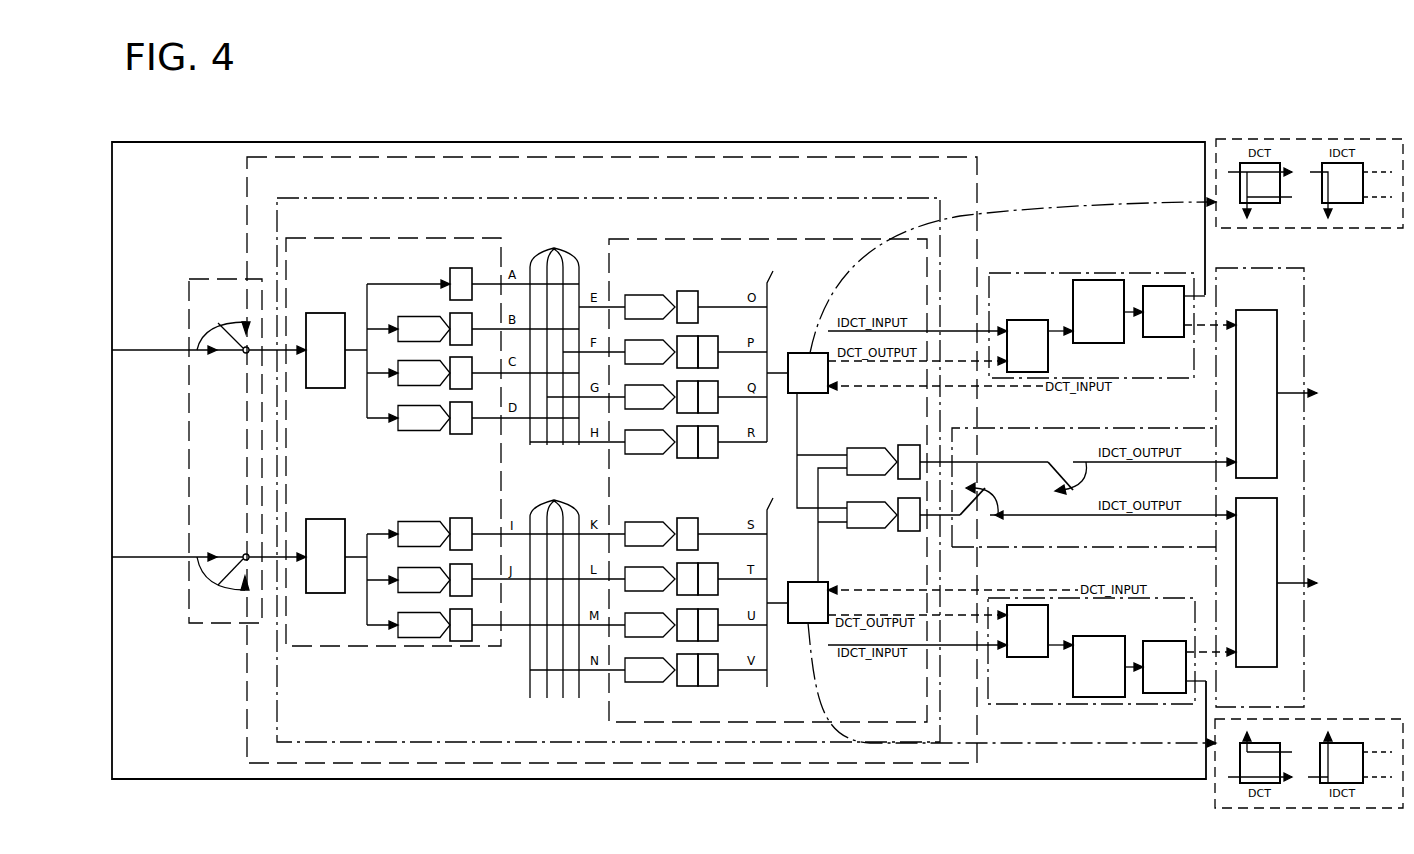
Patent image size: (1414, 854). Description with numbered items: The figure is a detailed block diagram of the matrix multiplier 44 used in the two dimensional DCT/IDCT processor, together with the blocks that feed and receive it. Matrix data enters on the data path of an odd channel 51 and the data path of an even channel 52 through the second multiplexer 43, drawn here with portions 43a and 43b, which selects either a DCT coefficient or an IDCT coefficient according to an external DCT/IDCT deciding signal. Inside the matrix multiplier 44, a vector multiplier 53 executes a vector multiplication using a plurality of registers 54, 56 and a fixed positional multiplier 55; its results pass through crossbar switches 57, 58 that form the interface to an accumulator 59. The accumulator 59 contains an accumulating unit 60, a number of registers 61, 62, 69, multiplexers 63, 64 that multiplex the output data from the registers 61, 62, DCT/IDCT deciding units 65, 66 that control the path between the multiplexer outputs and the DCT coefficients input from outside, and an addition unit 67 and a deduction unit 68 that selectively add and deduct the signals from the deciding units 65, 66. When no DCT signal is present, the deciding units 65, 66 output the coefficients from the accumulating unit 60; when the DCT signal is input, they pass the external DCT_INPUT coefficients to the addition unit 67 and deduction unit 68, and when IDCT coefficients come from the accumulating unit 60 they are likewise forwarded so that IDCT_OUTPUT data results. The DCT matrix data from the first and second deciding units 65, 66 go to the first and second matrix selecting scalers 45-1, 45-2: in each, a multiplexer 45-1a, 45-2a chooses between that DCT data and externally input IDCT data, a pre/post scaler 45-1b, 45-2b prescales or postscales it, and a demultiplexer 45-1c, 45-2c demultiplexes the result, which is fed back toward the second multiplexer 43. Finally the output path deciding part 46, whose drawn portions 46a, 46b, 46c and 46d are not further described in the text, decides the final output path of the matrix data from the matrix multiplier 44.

The second multiplexer 43 is at (205, 279).
The first switch 43a is at (223, 346).
The second switch 43b is at (224, 566).
The matrix multiplier 44 is at (609, 197).
The first matrix selecting scaler 45-1 is at (1025, 272).
The multiplexer 45-1a is at (1028, 319).
The pre/post scaler 45-1b is at (1100, 279).
The demultiplexer 45-1c is at (1165, 285).
The second matrix selecting scaler 45-2 is at (1025, 705).
The multiplexer 45-2a is at (1028, 658).
The pre/post scaler 45-2b is at (1100, 698).
The demultiplexer 45-2c is at (1166, 694).
The output path deciding part 46 is at (1259, 267).
The first output switch 46a is at (1062, 463).
The second output switch 46b is at (971, 516).
The first output buffer 46c is at (1256, 309).
The second output buffer 46d is at (1255, 668).
The data path of an odd channel 51 is at (153, 352).
The data path of an even channel 52 is at (153, 559).
The vector multiplier 53 is at (384, 237).
The register 54 is at (327, 312).
The fixed positional multiplier 55 is at (400, 317).
The register 56 is at (473, 292).
The crossbar switch 57 is at (554, 337).
The crossbar switch 58 is at (554, 590).
The accumulator 59 is at (755, 238).
The accumulating unit 60 is at (637, 319).
The register 61 is at (698, 302).
The register 62 is at (718, 359).
The multiplexer 63 is at (777, 348).
The multiplexer 64 is at (777, 584).
The first DCT/IDCT deciding unit 65 is at (791, 352).
The second DCT/IDCT deciding unit 66 is at (791, 581).
The addition unit 67 is at (862, 447).
The deduction unit 68 is at (858, 529).
The register 69 is at (906, 444).